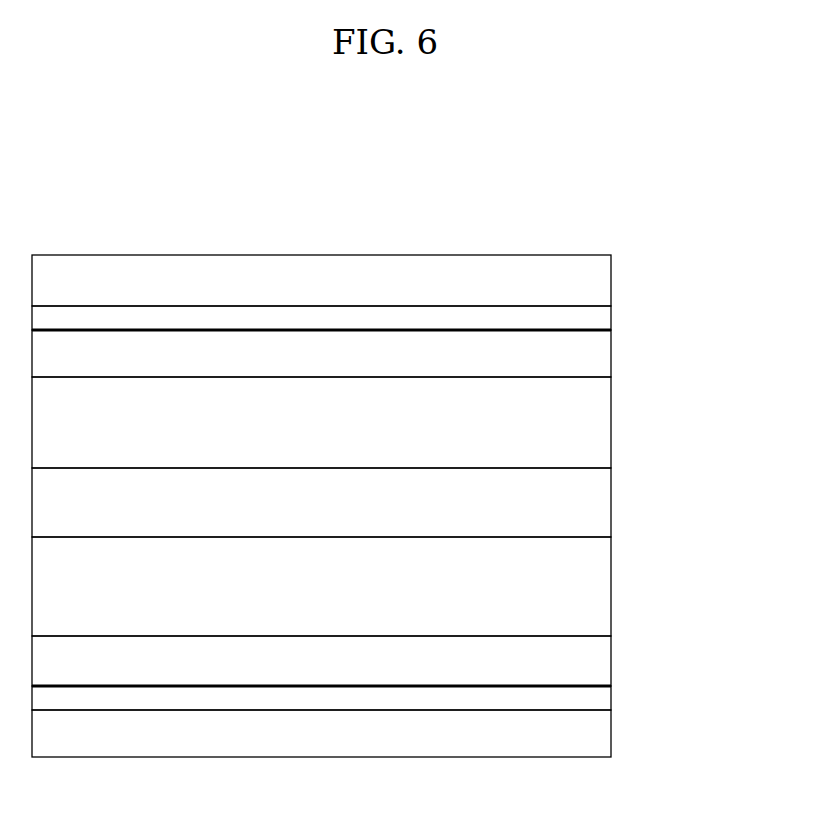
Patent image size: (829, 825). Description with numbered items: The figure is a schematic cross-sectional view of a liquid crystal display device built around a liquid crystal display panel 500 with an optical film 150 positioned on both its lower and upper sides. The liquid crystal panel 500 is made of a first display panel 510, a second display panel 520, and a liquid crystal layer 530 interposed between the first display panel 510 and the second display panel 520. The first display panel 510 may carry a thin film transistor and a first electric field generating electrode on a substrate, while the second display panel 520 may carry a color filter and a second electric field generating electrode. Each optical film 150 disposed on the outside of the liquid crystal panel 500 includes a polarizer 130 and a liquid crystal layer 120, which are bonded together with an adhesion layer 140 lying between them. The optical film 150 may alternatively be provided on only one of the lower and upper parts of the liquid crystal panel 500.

The polarizer 130 is at (611, 283).
The adhesion layer 140 is at (611, 319).
The liquid crystal layer 120 is at (356, 508).
The optical film 150 is at (389, 506).
The second display panel 520 is at (611, 422).
The liquid crystal layer 530 is at (611, 506).
The first display panel 510 is at (356, 586).
The liquid crystal display panel 500 is at (388, 506).